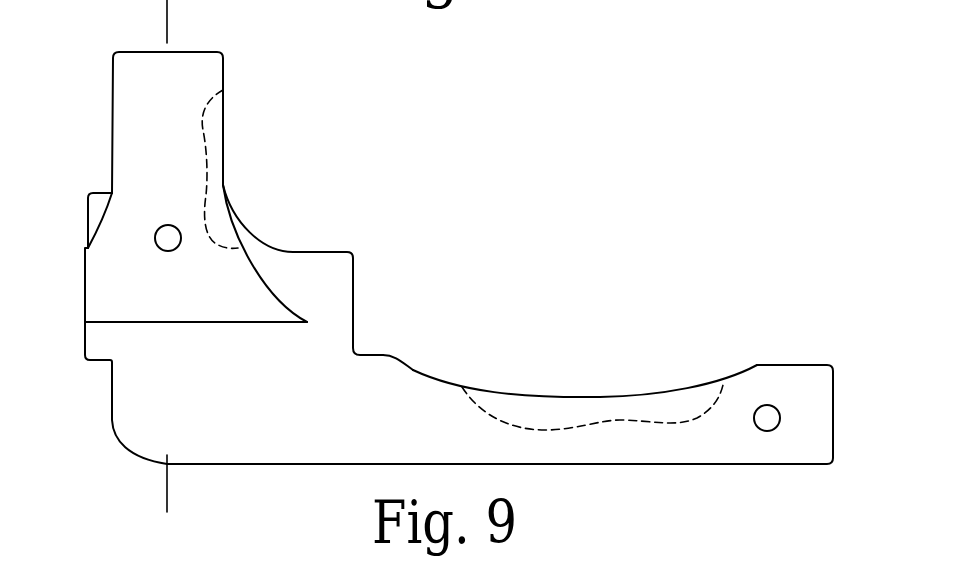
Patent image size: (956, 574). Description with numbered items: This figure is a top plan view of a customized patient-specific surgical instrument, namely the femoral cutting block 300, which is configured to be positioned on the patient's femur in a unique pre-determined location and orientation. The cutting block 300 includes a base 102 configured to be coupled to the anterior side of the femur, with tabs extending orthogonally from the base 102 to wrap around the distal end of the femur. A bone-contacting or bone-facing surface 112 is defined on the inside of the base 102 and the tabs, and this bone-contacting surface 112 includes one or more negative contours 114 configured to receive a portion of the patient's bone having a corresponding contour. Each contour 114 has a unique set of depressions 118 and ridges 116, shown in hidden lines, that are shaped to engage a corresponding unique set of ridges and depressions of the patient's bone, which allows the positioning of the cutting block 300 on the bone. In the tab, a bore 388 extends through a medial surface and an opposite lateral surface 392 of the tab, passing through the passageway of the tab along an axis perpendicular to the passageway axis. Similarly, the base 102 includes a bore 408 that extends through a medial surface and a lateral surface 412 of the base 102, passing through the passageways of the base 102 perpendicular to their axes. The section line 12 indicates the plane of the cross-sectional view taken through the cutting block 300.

The section line 12 is at (158, 502).
The base 102 is at (123, 63).
The bone-contacting surface 112 is at (223, 62).
The negative contour 114 is at (254, 203).
The ridges 116 is at (207, 176).
The depressions 118 is at (212, 131).
The femoral cutting block 300 is at (688, 170).
The bore 388 is at (775, 401).
The lateral surface 392 is at (798, 453).
The bore 408 is at (168, 243).
The lateral surface 412 is at (102, 288).